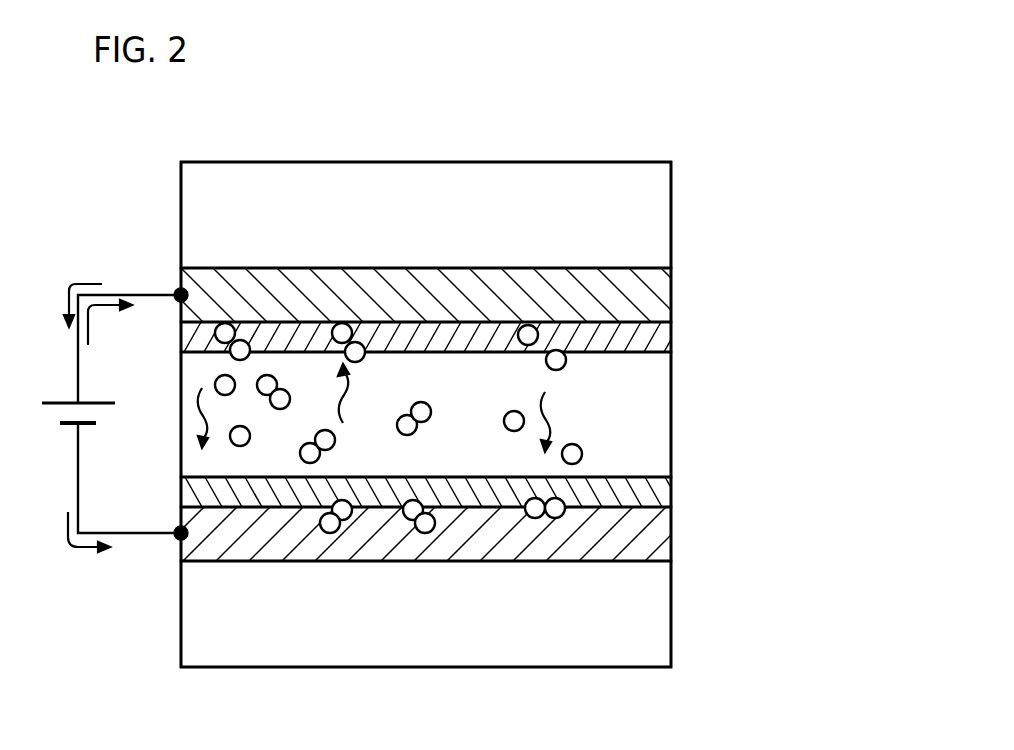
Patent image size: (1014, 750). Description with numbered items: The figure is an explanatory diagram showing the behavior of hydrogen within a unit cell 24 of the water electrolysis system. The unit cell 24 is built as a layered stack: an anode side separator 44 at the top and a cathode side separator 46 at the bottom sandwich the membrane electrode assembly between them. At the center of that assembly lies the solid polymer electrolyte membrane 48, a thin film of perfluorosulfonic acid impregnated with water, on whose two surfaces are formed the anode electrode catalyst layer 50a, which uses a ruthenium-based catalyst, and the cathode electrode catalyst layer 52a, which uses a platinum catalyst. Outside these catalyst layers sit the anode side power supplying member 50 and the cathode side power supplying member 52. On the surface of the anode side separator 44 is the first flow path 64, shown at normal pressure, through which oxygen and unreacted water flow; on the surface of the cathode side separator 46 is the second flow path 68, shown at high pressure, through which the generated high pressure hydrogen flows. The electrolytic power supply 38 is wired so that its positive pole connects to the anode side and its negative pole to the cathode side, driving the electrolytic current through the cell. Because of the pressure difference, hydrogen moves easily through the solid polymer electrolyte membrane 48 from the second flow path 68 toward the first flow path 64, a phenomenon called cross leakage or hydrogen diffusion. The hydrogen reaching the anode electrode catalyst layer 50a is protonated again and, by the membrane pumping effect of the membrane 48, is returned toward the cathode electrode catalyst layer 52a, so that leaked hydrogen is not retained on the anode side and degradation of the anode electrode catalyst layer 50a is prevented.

The unit cell 24 is at (660, 89).
The electrolytic power supply 38 is at (62, 400).
The anode side separator 44 is at (673, 206).
The cathode side separator 46 is at (673, 623).
The solid polymer electrolyte membrane 48 is at (660, 410).
The anode side power supplying member 50 is at (660, 293).
The anode electrode catalyst layer 50a is at (660, 339).
The cathode side power supplying member 52 is at (660, 543).
The cathode electrode catalyst layer 52a is at (660, 497).
The first flow path 64 is at (524, 178).
The second flow path 68 is at (524, 650).